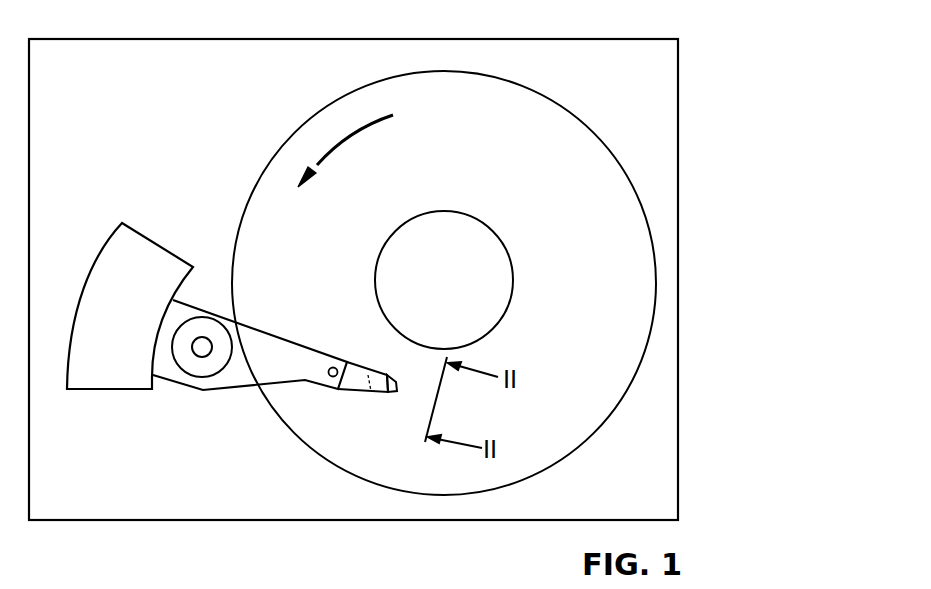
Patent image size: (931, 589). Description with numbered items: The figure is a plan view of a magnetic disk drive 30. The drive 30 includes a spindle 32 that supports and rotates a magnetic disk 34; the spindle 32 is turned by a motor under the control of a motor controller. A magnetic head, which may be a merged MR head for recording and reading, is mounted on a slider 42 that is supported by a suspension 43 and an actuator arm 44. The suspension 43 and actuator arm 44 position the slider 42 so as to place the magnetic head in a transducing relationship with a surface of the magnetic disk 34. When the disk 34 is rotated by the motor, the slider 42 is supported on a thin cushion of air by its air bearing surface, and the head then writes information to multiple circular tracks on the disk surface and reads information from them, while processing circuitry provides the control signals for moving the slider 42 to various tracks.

The magnetic disk drive 30 is at (698, 52).
The spindle 32 is at (485, 222).
The magnetic disk 34 is at (597, 304).
The slider 42 is at (398, 392).
The suspension 43 is at (357, 391).
The actuator arm 44 is at (260, 327).